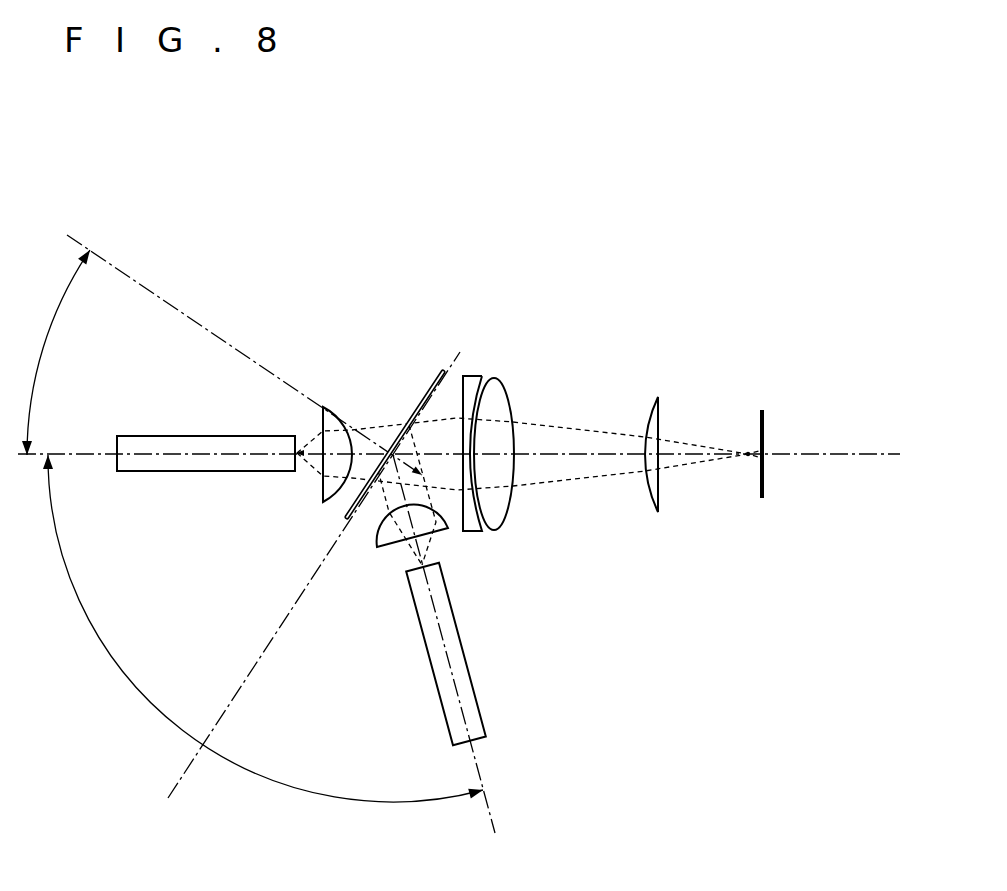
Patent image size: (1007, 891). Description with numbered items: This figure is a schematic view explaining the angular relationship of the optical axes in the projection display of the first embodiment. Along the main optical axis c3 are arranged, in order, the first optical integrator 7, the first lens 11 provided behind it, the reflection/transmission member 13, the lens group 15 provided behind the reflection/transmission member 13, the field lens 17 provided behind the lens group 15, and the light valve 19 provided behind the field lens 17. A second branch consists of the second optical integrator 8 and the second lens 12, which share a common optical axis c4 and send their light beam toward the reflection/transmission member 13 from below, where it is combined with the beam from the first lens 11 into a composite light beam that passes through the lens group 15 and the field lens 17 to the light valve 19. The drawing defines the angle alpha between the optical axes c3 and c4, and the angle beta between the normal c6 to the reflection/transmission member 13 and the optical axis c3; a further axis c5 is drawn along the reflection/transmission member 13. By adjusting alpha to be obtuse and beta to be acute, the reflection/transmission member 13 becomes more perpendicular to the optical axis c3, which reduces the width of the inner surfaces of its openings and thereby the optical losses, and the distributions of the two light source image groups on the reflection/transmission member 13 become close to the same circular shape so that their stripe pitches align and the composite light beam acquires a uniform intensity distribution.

The first optical integrator 7 is at (207, 436).
The second optical integrator 8 is at (464, 647).
The first lens 11 is at (333, 407).
The second lens 12 is at (377, 545).
The reflection/transmission member 13 is at (432, 383).
The lens group 15 is at (463, 536).
The field lens 17 is at (655, 397).
The light valve 19 is at (762, 410).
The optical axis c3 is at (825, 452).
The optical axis c4 is at (478, 770).
The beam splitter axis c5 is at (185, 770).
The normal to the reflection/transmission member c6 is at (210, 331).